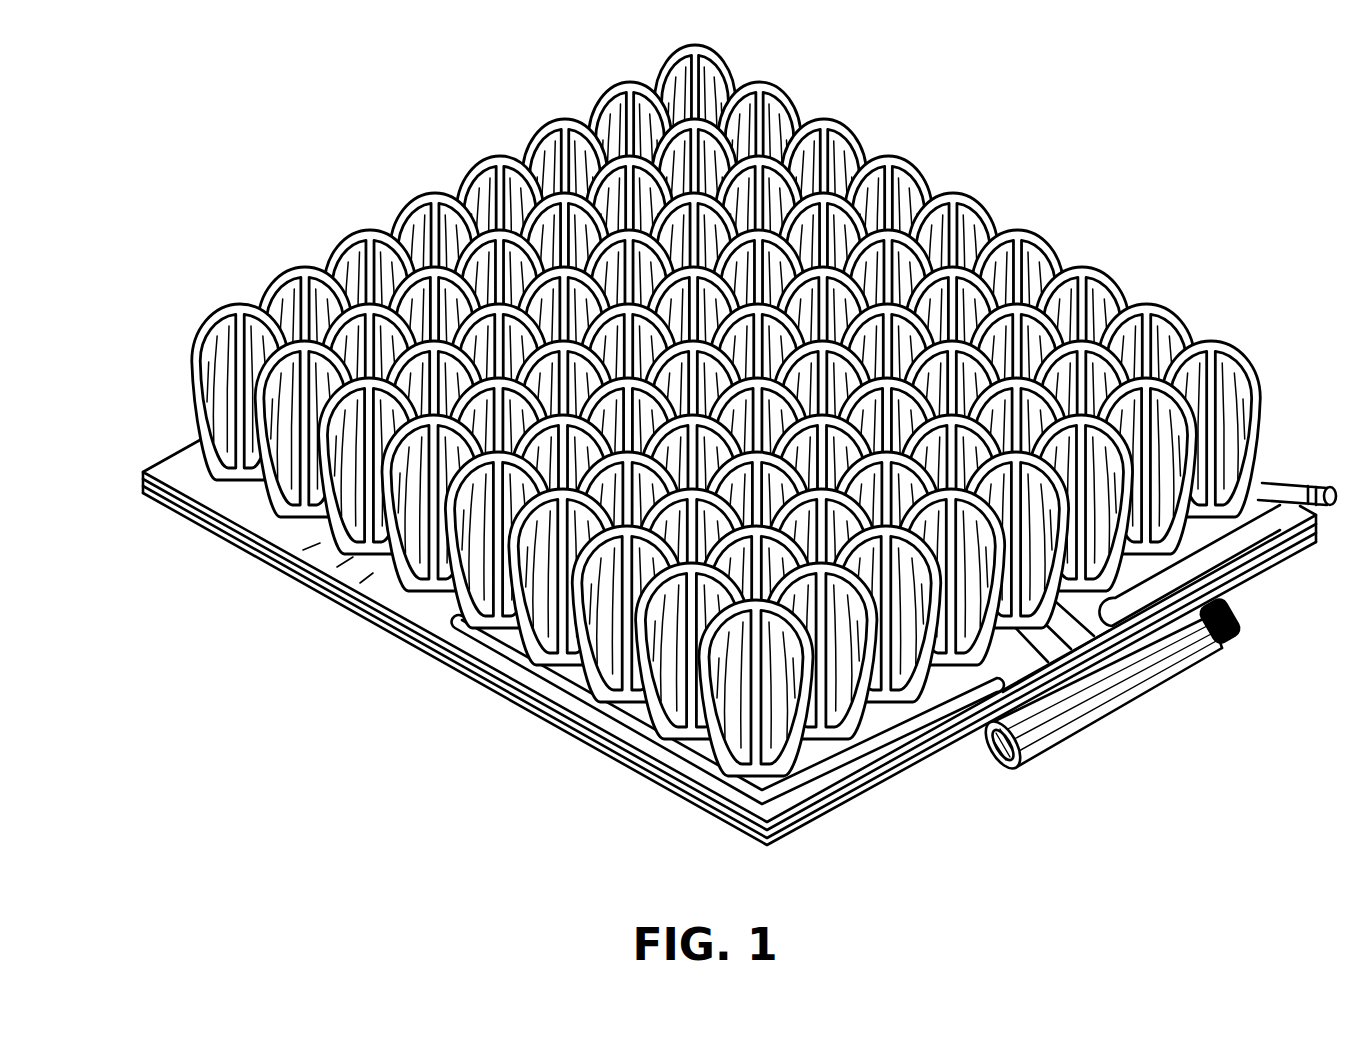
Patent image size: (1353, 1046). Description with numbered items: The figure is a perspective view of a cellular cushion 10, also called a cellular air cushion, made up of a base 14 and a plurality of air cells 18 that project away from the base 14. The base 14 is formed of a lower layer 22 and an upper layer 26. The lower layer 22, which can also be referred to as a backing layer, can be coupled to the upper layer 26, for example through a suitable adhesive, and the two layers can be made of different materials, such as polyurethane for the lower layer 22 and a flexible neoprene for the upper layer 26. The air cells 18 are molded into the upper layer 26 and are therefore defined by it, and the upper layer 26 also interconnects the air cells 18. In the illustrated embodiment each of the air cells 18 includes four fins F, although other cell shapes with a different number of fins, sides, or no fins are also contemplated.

The cellular cushion 10 is at (967, 158).
The base 14 is at (327, 602).
The air cells 18 is at (1253, 383).
The lower layer 22 is at (142, 490).
The upper layer 26 is at (413, 608).
The fins F is at (1042, 248).